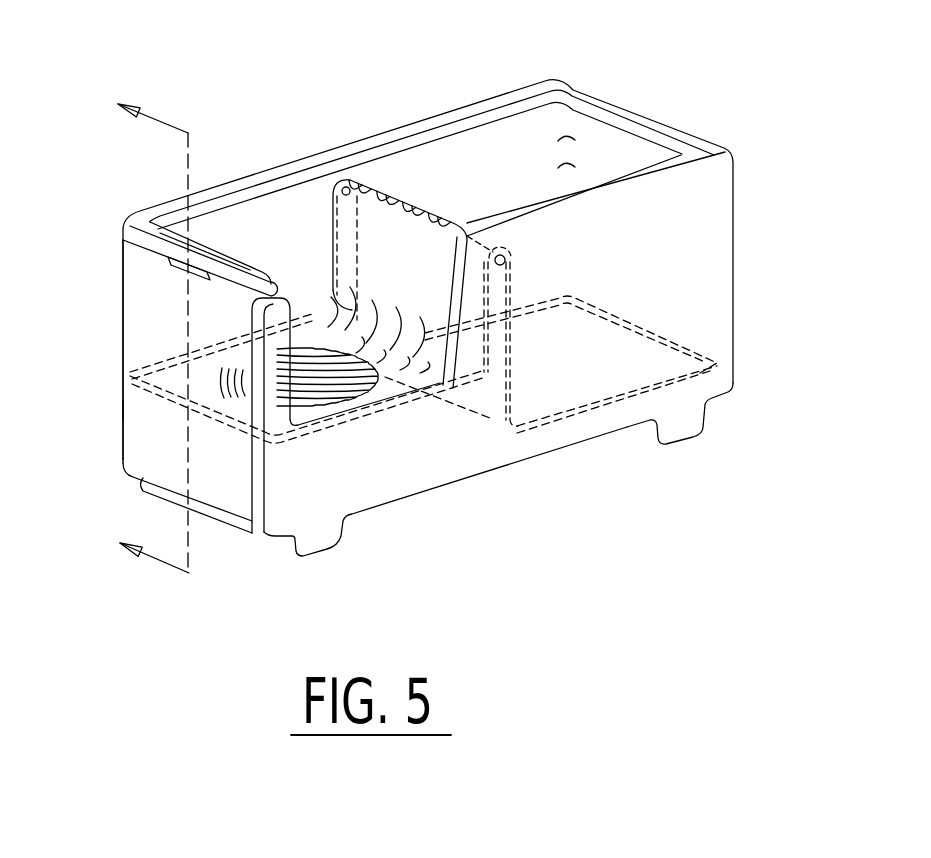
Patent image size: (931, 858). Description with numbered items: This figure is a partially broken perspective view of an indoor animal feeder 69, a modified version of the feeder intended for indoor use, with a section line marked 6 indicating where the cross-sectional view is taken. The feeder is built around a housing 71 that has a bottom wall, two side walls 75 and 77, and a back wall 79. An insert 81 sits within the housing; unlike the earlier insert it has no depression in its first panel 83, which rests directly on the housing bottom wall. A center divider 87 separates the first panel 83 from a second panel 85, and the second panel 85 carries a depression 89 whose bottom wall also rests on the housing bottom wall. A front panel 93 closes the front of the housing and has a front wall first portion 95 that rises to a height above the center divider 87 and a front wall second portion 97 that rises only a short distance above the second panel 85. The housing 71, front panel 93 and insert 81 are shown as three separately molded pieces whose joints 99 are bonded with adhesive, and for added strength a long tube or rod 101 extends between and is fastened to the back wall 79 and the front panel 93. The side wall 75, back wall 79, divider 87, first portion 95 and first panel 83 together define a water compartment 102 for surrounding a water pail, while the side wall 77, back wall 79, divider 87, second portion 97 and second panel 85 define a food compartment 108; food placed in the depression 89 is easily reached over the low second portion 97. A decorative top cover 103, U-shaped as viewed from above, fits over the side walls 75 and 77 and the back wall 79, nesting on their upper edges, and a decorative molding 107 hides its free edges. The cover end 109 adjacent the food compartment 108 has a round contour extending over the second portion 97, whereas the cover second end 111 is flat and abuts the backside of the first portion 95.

The section line 6- 6 is at (167, 352).
The indoor animal feeder 69 is at (769, 265).
The housing 71 is at (112, 408).
The side wall 75 is at (610, 152).
The side wall 77 is at (143, 330).
The back wall 79 is at (283, 237).
The insert 81 is at (397, 184).
The first panel 83 is at (734, 325).
The second panel 85 is at (330, 345).
The center divider 87 is at (417, 207).
The depression 89 is at (299, 377).
The front panel 93 is at (422, 499).
The front wall first portion 95 is at (677, 225).
The front wall second portion 97 is at (457, 447).
The joints 99 is at (293, 318).
The tube or rod 101 is at (510, 256).
The water compartment 102 is at (533, 171).
The top cover 103 is at (309, 152).
The decorative molding 107 is at (182, 263).
The food compartment 108 is at (290, 206).
The end of the cover 109 is at (225, 268).
The cover second end 111 is at (687, 133).